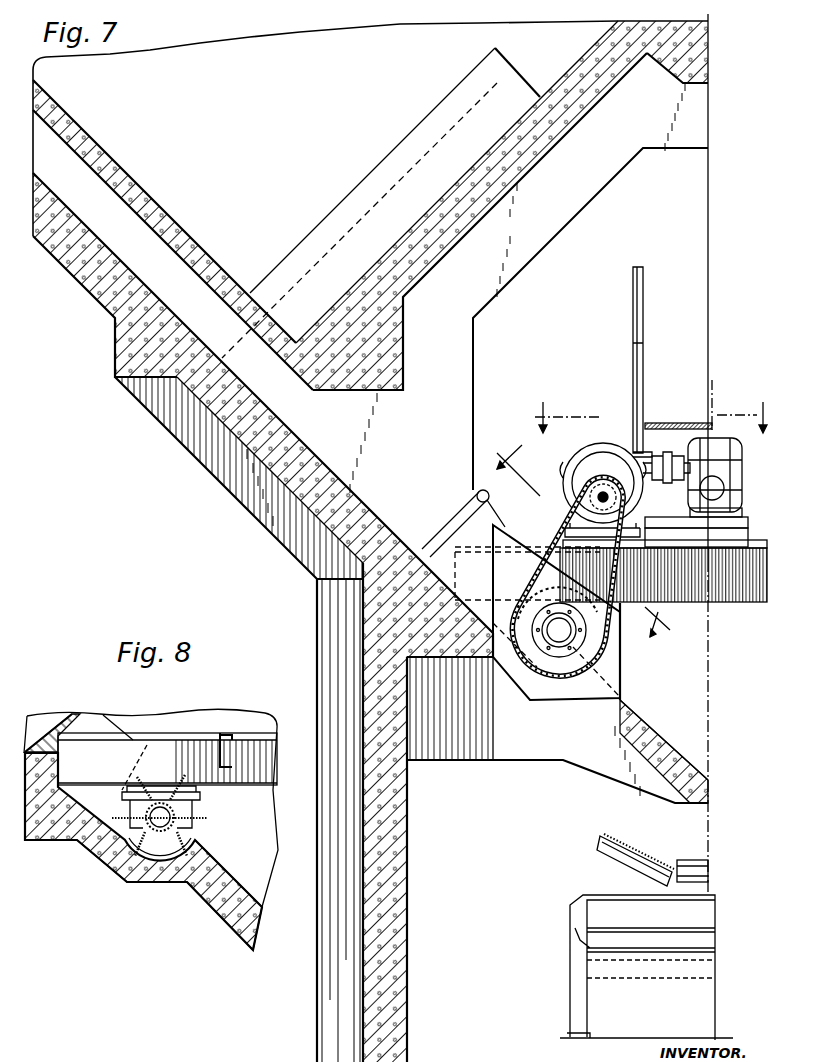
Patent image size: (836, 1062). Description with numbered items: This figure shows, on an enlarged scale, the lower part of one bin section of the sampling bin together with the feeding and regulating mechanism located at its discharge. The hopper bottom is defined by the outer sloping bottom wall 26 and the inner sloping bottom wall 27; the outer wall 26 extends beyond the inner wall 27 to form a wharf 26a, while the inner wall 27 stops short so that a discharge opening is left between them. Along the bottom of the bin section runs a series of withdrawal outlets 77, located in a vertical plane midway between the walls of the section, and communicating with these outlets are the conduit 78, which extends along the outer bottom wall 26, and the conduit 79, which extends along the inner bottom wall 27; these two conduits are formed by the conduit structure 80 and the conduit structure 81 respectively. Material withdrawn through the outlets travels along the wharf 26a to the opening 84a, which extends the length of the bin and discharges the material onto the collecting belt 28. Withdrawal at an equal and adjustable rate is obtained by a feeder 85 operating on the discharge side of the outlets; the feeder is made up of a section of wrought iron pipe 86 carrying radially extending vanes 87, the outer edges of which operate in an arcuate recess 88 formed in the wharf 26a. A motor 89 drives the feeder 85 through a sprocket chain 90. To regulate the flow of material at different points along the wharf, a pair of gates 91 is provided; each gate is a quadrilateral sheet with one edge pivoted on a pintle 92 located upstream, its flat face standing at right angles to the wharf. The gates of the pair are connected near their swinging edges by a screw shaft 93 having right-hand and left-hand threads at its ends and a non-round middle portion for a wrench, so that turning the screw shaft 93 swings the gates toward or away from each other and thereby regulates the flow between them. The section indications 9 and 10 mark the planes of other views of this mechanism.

In FIG. 7, the conduit 78 is at (122, 237).
In FIG. 7, the conduit structure 80 is at (175, 228).
In FIG. 7, the conduit structure 81 is at (332, 222).
In FIG. 7, the conduit 79 is at (377, 235).
In FIG. 7, the sloping bottom wall 27 is at (470, 211).
In FIG. 7, the sloping bottom wall 26 is at (203, 433).
In FIG. 7, the outlets 77 is at (277, 387).
In FIG. 7, the section line 10- 10 is at (655, 406).
In FIG. 7, the section line 9- 9 is at (575, 541).
In FIG. 7, the motor 89 is at (708, 424).
In FIG. 7, the gate 91 is at (497, 522).
In FIG. 8, the gate 91 is at (103, 713).
In FIG. 7, the sprocket chain 90 is at (563, 533).
In FIG. 7, the pintle 92 is at (448, 561).
In FIG. 7, the screw shaft 93 is at (537, 565).
In FIG. 8, the screw shaft 93 is at (143, 752).
In FIG. 7, the wrought iron pipe 86 is at (573, 640).
In FIG. 8, the wrought iron pipe 86 is at (177, 813).
In FIG. 7, the opening 84a is at (708, 793).
In FIG. 7, the collecting belt 28 is at (634, 843).
In FIG. 8, the vanes 87 is at (150, 786).
In FIG. 8, the feeder 85 is at (113, 853).
In FIG. 8, the arcuate recess 88 is at (160, 868).
In FIG. 8, the wharf 26a is at (215, 910).